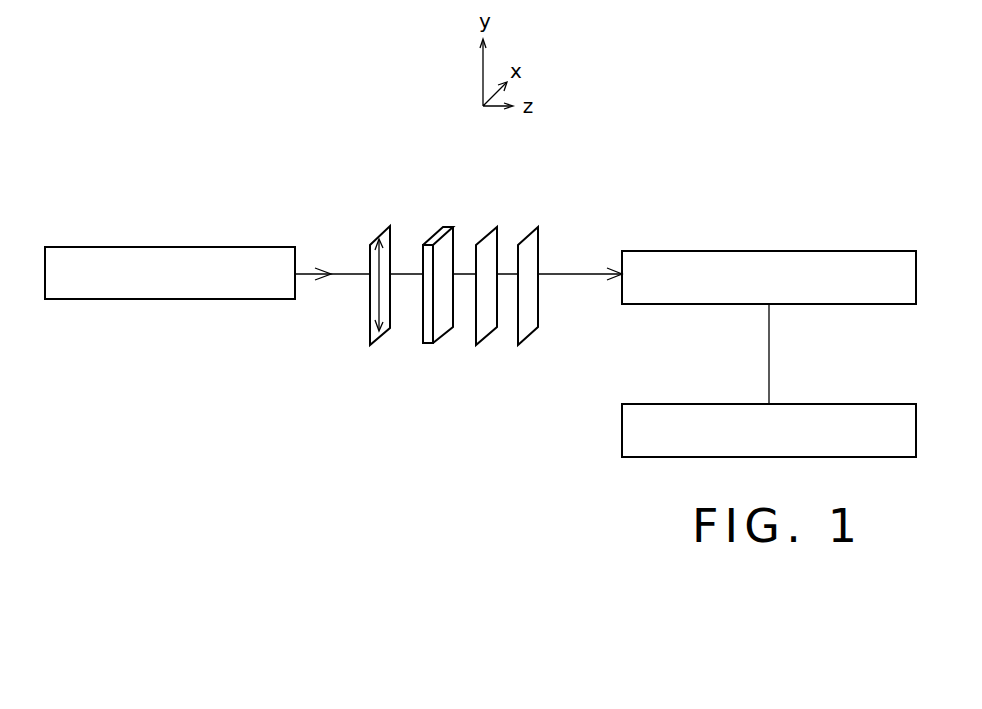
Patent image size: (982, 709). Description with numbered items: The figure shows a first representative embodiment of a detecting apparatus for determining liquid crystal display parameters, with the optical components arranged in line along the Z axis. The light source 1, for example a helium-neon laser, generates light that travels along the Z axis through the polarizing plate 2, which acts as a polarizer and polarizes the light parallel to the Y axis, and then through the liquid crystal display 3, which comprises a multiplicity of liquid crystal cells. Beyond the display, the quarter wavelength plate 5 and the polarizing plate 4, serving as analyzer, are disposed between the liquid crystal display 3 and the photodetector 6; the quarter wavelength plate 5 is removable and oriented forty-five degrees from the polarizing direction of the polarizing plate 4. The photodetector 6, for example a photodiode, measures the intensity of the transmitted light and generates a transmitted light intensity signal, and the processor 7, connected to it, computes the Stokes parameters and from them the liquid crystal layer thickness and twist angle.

The light source 1 is at (222, 247).
The polarizing plate (polarizer) 2 is at (373, 243).
The liquid crystal display 3 is at (428, 245).
The polarizing plate (analyzer) 4 is at (528, 240).
The quarter wavelength plate 5 is at (492, 232).
The photodetector 6 is at (707, 251).
The processor 7 is at (848, 403).